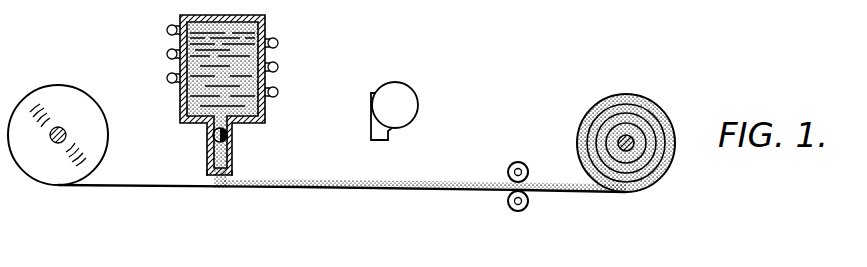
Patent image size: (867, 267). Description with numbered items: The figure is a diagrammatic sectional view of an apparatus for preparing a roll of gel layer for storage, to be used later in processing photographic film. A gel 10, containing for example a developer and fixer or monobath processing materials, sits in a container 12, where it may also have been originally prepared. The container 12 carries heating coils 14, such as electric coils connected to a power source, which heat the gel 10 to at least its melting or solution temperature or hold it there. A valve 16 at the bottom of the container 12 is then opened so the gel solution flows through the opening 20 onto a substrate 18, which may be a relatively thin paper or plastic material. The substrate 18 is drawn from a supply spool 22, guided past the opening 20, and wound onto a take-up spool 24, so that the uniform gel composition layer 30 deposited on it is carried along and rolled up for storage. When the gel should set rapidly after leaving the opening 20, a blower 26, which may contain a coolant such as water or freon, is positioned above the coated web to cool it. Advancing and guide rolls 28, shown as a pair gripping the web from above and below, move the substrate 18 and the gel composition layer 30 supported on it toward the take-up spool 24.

The gel 10 is at (260, 106).
The container 12 is at (180, 110).
The heating coils 14 is at (167, 30).
The valve 16 is at (230, 135).
The substrate 18 is at (134, 189).
The opening 20 is at (212, 181).
The supply spool 22 is at (77, 96).
The take-up spool 24 is at (622, 96).
The blower 26 is at (372, 102).
The advancing and guide rolls 28 is at (518, 161).
The gel composition layer 30 is at (443, 180).